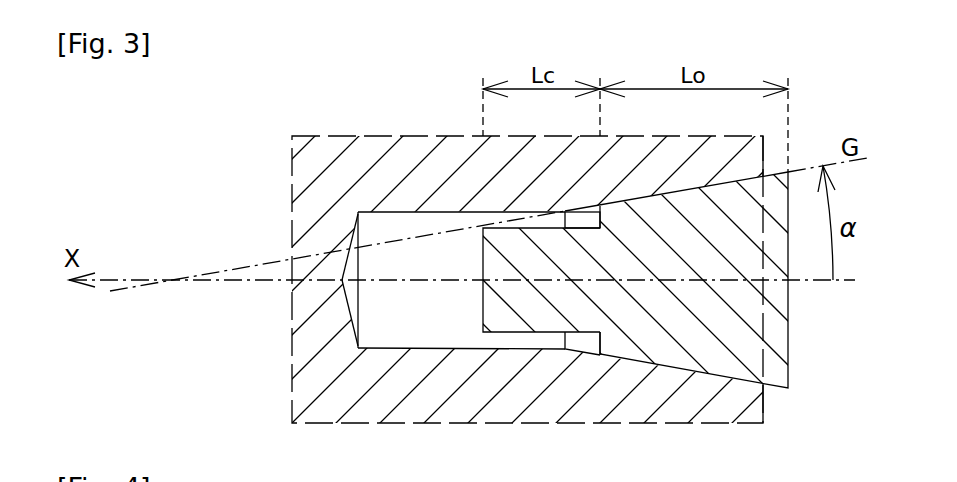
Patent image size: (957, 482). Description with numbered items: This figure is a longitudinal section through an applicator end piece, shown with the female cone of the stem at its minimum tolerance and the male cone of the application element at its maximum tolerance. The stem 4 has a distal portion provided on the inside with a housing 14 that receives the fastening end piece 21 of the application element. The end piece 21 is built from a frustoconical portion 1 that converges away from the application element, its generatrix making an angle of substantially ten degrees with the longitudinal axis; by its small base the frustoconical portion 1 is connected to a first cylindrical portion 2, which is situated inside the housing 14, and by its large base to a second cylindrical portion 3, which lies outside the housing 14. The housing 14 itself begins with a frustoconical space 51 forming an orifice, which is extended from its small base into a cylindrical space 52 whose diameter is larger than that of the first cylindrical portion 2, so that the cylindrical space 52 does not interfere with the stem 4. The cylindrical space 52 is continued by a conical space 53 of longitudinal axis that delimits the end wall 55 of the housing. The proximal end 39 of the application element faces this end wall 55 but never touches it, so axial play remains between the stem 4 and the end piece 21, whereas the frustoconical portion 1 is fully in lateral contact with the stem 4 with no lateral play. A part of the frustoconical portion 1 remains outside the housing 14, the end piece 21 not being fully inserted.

The frustoconical portion 1 is at (710, 325).
The first cylindrical portion 2 is at (587, 316).
The second cylindrical portion 3 is at (553, 328).
The stem 4 is at (332, 397).
The housing 14 is at (389, 325).
The end piece 21 is at (585, 338).
The proximal end 39 is at (483, 308).
The frustoconical space 51 is at (688, 192).
The cylindrical space 52 is at (397, 223).
The conical space 53 is at (355, 247).
The end wall 55 is at (350, 265).